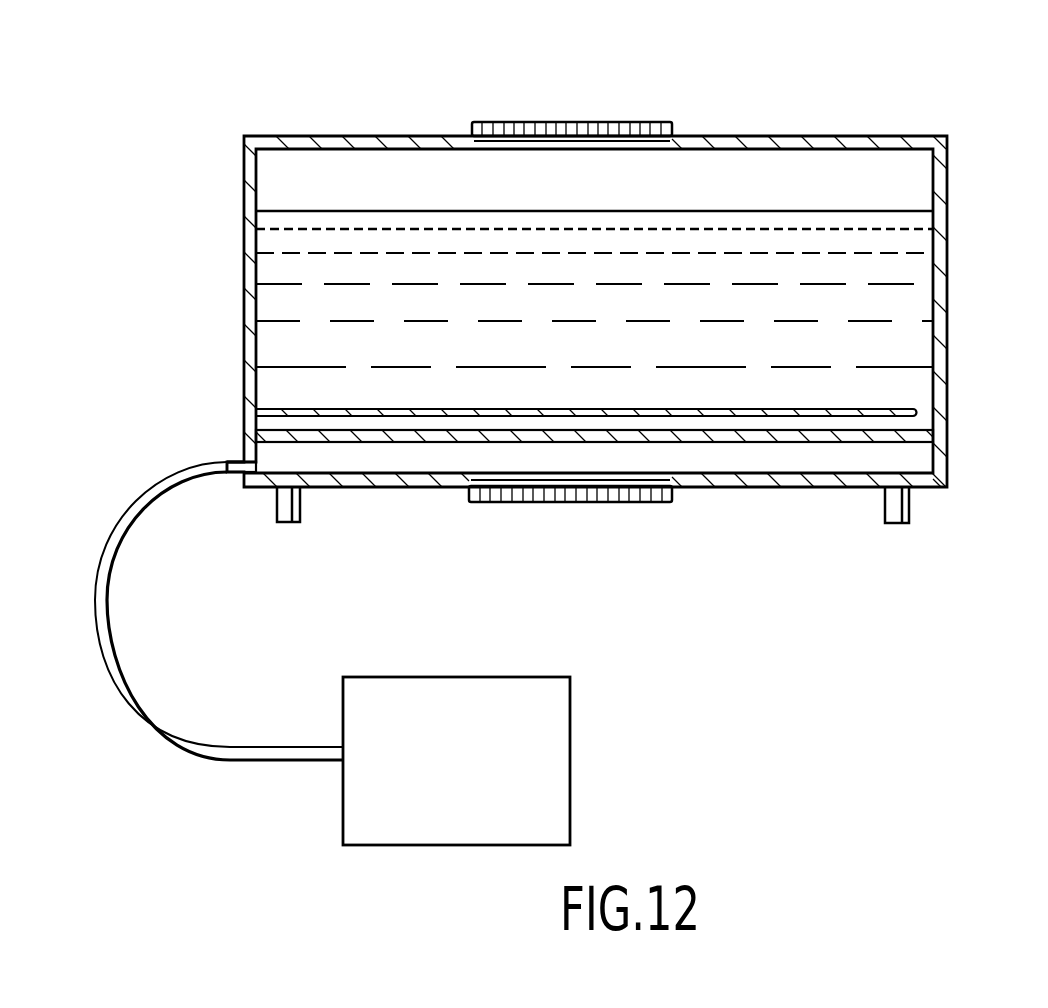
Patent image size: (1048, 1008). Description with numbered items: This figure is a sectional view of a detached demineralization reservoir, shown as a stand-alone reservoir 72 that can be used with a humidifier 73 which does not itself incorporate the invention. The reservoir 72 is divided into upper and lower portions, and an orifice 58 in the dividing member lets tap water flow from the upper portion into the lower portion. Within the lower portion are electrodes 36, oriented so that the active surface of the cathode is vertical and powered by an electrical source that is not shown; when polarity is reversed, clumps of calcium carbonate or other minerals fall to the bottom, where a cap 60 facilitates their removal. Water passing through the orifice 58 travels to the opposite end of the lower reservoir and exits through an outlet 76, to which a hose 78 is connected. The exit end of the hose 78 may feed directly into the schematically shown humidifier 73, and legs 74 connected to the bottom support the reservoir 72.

The electrodes 36 is at (265, 433).
The orifice 58 is at (926, 412).
The cap 60 is at (502, 494).
The stand-alone reservoir 72 is at (558, 122).
The humidifier 73 is at (530, 677).
The legs 74 is at (276, 522).
The outlet 76 is at (235, 473).
The hose 78 is at (108, 522).